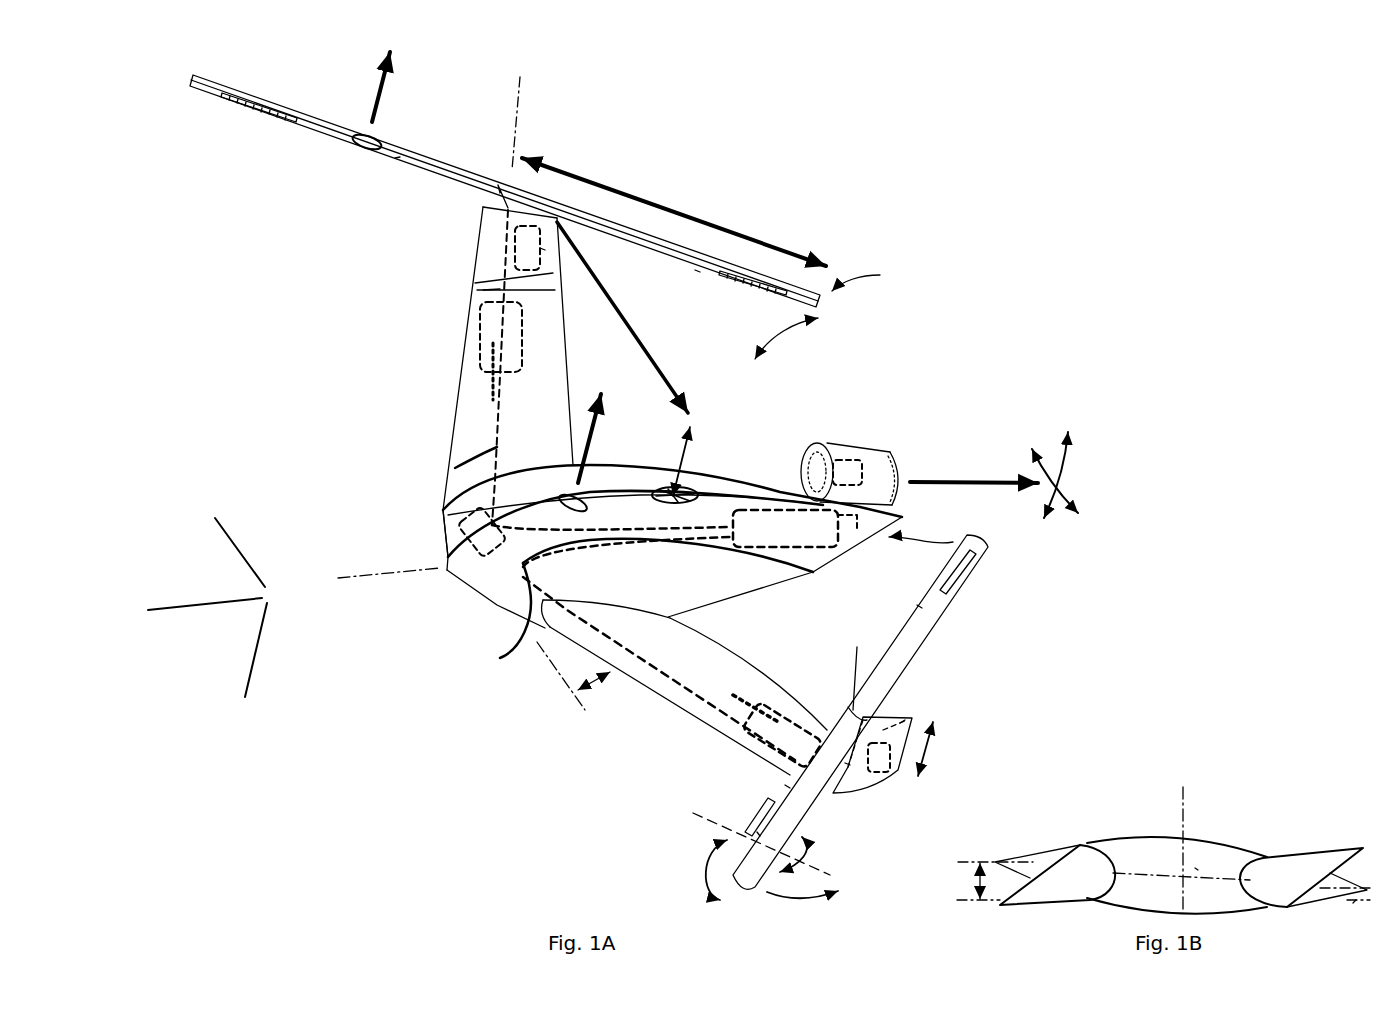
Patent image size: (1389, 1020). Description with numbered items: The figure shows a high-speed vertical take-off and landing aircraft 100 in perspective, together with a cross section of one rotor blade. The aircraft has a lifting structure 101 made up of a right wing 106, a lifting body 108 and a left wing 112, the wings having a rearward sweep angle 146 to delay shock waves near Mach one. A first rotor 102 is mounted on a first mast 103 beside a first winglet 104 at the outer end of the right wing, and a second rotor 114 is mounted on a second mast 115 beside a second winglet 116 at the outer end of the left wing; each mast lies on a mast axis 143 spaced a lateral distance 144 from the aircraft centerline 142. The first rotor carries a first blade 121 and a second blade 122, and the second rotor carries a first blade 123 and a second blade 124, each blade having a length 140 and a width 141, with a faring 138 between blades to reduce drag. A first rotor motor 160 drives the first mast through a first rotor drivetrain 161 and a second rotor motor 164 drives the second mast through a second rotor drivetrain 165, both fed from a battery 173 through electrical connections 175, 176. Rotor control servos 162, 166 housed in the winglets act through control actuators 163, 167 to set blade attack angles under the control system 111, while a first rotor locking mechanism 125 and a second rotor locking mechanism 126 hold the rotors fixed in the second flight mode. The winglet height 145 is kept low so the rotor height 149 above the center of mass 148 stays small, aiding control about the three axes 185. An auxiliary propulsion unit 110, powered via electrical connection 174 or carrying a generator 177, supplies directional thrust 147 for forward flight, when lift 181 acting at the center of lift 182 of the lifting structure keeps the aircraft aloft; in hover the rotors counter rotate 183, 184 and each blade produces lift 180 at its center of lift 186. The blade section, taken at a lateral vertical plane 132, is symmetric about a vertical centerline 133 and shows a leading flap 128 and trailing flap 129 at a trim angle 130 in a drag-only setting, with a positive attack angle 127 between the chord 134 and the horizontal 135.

In FIG. 1A, the aircraft 100 is at (808, 107).
In FIG. 1A, the lifting structure 101 is at (290, 438).
In FIG. 1A, the first rotor 102 is at (287, 151).
In FIG. 1A, the first mast 103 is at (507, 247).
In FIG. 1A, the first winglet 104 is at (483, 220).
In FIG. 1A, the right wing 106 is at (462, 398).
In FIG. 1A, the lifting body 108 is at (440, 533).
In FIG. 1A, the auxiliary propulsion unit 110 is at (877, 448).
In FIG. 1A, the control system 111 is at (473, 558).
In FIG. 1A, the left wing 112 is at (683, 710).
In FIG. 1A, the second rotor 114 is at (950, 642).
In FIG. 1A, the second mast 115 is at (853, 763).
In FIG. 1A, the second winglet 116 is at (883, 780).
In FIG. 1A, the first blade 121 is at (395, 160).
In FIG. 1A, the second blade 122 is at (695, 271).
In FIG. 1A, the first blade 123 is at (785, 785).
In FIG. 1B, the first blade 123 is at (1153, 838).
In FIG. 1A, the second blade 124 is at (917, 605).
In FIG. 1A, the first rotor locking mechanism 125 is at (493, 352).
In FIG. 1A, the second rotor locking mechanism 126 is at (743, 700).
In FIG. 1A, the attack angle 127 is at (724, 843).
In FIG. 1B, the attack angle 127 is at (962, 885).
In FIG. 1A, the leading flap 128 is at (757, 832).
In FIG. 1B, the leading flap 128 is at (1045, 905).
In FIG. 1A, the trailing flap 129 is at (803, 829).
In FIG. 1B, the trailing flap 129 is at (1303, 853).
In FIG. 1A, the trim angle 130 is at (797, 853).
In FIG. 1A, the lateral vertical plane 132 is at (710, 820).
In FIG. 1B, the vertical centerline 133 is at (1178, 817).
In FIG. 1B, the chord 134 is at (1195, 868).
In FIG. 1B, the horizontal 135 is at (1353, 903).
In FIG. 1A, the faring 138 is at (857, 667).
In FIG. 1A, the length 140 is at (743, 233).
In FIG. 1A, the width 141 is at (876, 278).
In FIG. 1A, the aircraft centerline 142 is at (415, 573).
In FIG. 1A, the mast axis 143 is at (517, 108).
In FIG. 1A, the lateral distance 144 is at (640, 343).
In FIG. 1A, the winglet height 145 is at (930, 748).
In FIG. 1A, the rearward sweep angle 146 is at (593, 687).
In FIG. 1A, the directional thrust 147 is at (1067, 472).
In FIG. 1A, the center of mass 148 is at (670, 493).
In FIG. 1A, the rotor height 149 is at (693, 440).
In FIG. 1A, the first rotor motor 160 is at (482, 327).
In FIG. 1A, the first rotor drivetrain 161 is at (483, 291).
In FIG. 1A, the rotor control servo 162 is at (541, 249).
In FIG. 1A, the control actuator 163 is at (527, 224).
In FIG. 1A, the second rotor motor 164 is at (793, 680).
In FIG. 1A, the second rotor drivetrain 165 is at (845, 763).
In FIG. 1A, the rotor control servo 166 is at (887, 780).
In FIG. 1A, the control actuator 167 is at (900, 723).
In FIG. 1A, the battery 173 is at (780, 507).
In FIG. 1A, the electrical connection 174 is at (853, 523).
In FIG. 1A, the electrical connection 175 is at (455, 468).
In FIG. 1A, the electrical connection 176 is at (493, 617).
In FIG. 1A, the generator 177 is at (845, 462).
In FIG. 1A, the lift 180 is at (385, 85).
In FIG. 1A, the lift 181 is at (599, 425).
In FIG. 1A, the center of lift 182 is at (590, 500).
In FIG. 1A, the counter rotation 183 is at (787, 340).
In FIG. 1A, the counter rotation 184 is at (943, 522).
In FIG. 1A, the three axes 185 is at (195, 558).
In FIG. 1A, the center of lift 186 is at (362, 150).